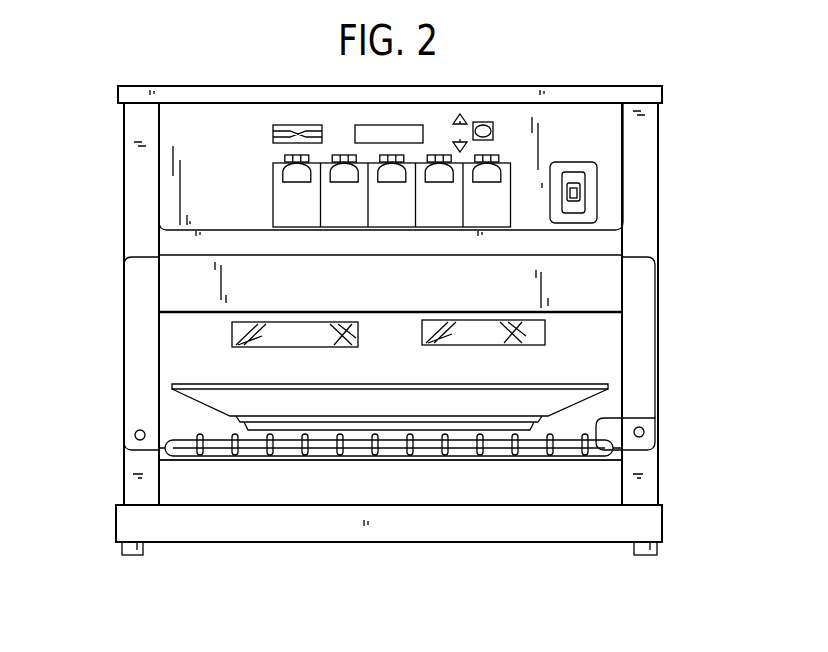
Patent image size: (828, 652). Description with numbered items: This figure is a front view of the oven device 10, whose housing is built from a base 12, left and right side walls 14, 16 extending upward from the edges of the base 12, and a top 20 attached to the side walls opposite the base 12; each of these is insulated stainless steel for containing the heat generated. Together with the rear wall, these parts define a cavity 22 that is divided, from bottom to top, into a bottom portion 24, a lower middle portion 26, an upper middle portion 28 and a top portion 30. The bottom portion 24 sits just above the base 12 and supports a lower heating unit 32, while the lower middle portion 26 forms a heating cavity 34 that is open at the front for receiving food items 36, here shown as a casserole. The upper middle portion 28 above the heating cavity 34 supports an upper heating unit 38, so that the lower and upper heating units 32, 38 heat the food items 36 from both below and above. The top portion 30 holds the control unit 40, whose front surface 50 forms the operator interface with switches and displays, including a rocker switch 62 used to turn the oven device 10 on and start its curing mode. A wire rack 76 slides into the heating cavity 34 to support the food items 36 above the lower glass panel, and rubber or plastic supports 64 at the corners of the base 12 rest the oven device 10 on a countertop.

The oven device 10 is at (168, 50).
The base 12 is at (517, 542).
The left side wall 14 is at (124, 127).
The right side wall 16 is at (658, 135).
The top 20 is at (533, 85).
The cavity 22 is at (442, 527).
The bottom portion 24 is at (442, 482).
The lower middle portion 26 is at (442, 386).
The upper middle portion 28 is at (442, 280).
The top portion 30 is at (449, 143).
The lower heating unit 32 is at (607, 488).
The heating cavity 34 is at (604, 347).
The food items 36 is at (383, 402).
The upper heating unit 38 is at (605, 283).
The control unit 40 is at (644, 192).
The front surface 50 is at (449, 143).
The rocker switch 62 is at (581, 193).
The supports 64 is at (130, 556).
The wire rack 76 is at (648, 419).